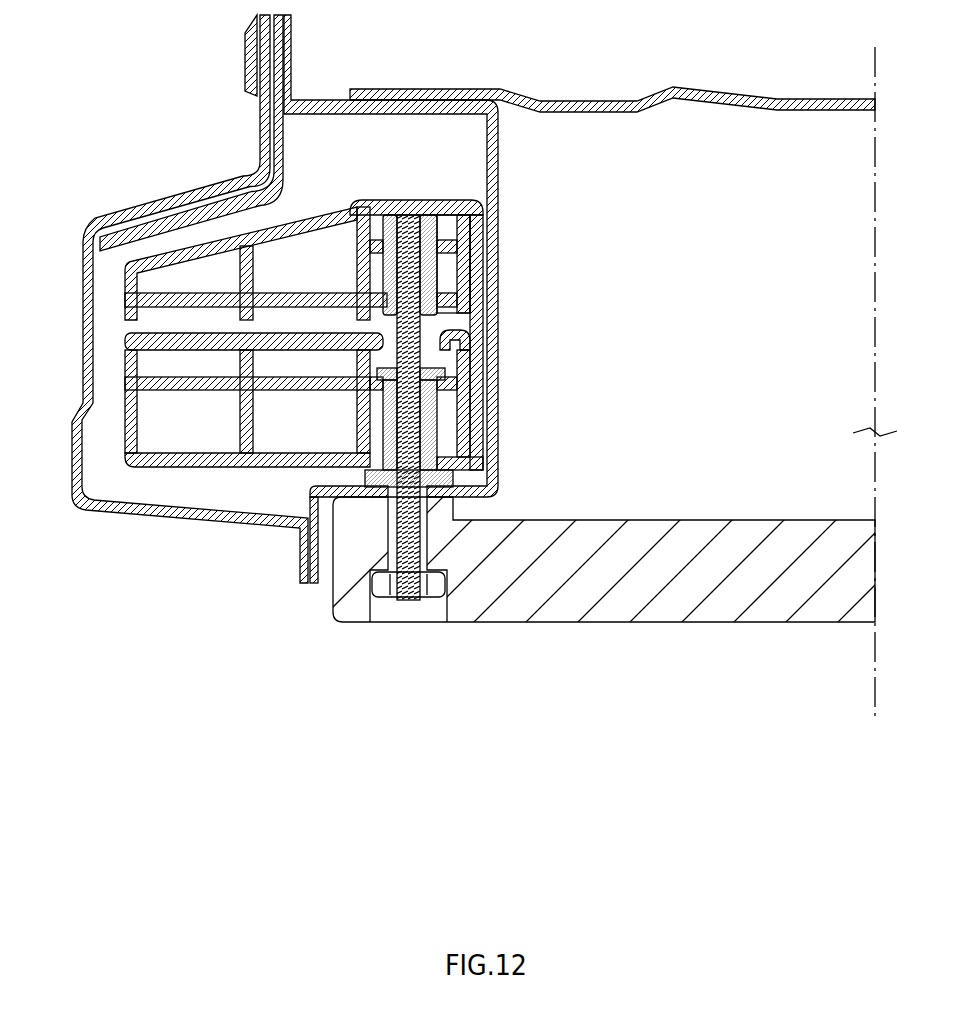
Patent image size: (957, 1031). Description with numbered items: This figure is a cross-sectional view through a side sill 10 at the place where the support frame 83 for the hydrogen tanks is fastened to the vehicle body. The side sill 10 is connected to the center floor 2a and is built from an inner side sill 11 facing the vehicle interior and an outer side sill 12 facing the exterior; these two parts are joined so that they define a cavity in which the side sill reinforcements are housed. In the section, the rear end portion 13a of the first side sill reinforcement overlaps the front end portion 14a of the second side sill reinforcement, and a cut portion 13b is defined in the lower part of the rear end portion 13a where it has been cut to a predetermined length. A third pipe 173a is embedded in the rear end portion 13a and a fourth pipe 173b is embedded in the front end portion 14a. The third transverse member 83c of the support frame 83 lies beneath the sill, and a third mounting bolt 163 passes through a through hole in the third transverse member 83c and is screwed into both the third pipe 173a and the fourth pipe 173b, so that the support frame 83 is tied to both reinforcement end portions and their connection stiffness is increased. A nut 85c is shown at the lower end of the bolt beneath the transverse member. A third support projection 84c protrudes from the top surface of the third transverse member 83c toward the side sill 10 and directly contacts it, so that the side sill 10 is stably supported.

The center floor 2a is at (793, 99).
The inner side sill 11 is at (498, 136).
The outer side sill 12 is at (83, 363).
The rear end portion of the first side sill reinforcement 13a is at (398, 202).
The cut portion 13b is at (116, 330).
The front end portion of the second side sill reinforcement 14a is at (188, 462).
The third pipe 173a is at (434, 278).
The fourth pipe 173b is at (434, 408).
The third mounting bolt 163 is at (432, 443).
The side sill 10 is at (80, 519).
The third support projection 84c is at (313, 530).
The nut 85c is at (440, 588).
The third transverse member 83c is at (547, 614).
The support frame 83 is at (737, 634).